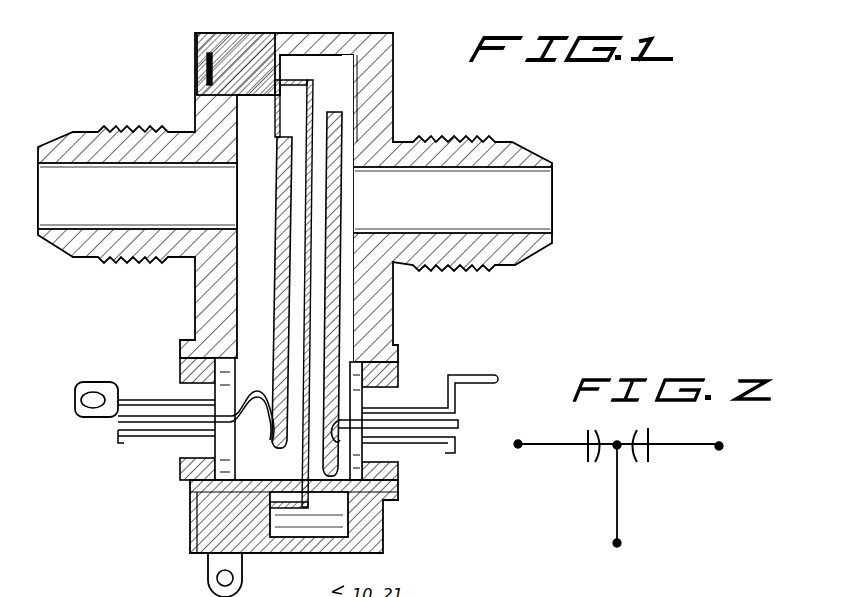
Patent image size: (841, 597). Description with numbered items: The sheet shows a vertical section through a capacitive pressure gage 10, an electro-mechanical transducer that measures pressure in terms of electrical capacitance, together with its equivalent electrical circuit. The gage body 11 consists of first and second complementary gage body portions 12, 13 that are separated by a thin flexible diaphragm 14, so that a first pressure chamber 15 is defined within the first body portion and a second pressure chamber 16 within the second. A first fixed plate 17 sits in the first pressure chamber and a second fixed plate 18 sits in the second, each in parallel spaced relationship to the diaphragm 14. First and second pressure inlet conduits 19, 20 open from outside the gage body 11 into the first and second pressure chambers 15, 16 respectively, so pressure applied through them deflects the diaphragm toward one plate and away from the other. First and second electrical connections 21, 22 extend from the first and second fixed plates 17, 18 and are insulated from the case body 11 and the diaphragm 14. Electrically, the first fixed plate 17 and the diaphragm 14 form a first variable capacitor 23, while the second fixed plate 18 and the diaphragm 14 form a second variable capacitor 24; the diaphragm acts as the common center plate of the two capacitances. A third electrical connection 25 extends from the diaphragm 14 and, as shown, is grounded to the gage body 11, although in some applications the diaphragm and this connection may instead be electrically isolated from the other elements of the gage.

In FIG. 1, the capacitive pressure gage 10 is at (414, 118).
In FIG. 1, the gage body 11 is at (318, 33).
In FIG. 1, the first gage body portion 12 is at (203, 100).
In FIG. 1, the second gage body portion 13 is at (393, 95).
In FIG. 1, the thin flexible diaphragm 14 is at (313, 100).
In FIG. 2, the thin flexible diaphragm 14 is at (607, 436).
In FIG. 1, the first pressure chamber 15 is at (247, 292).
In FIG. 1, the second pressure chamber 16 is at (347, 327).
In FIG. 1, the first fixed plate 17 is at (280, 183).
In FIG. 2, the first fixed plate 17 is at (588, 458).
In FIG. 1, the second fixed plate 18 is at (333, 205).
In FIG. 2, the second fixed plate 18 is at (648, 456).
In FIG. 1, the first pressure inlet conduit 19 is at (62, 209).
In FIG. 1, the second pressure inlet conduit 20 is at (538, 194).
In FIG. 1, the first electrical connection 21 is at (78, 383).
In FIG. 2, the first electrical connection 21 is at (518, 448).
In FIG. 1, the second electrical connection 22 is at (488, 377).
In FIG. 2, the second electrical connection 22 is at (719, 450).
In FIG. 1, the first variable capacitor 23 is at (300, 130).
In FIG. 2, the first variable capacitor 23 is at (594, 430).
In FIG. 1, the second variable capacitor 24 is at (310, 468).
In FIG. 2, the second variable capacitor 24 is at (640, 452).
In FIG. 1, the third electrical connection 25 is at (240, 582).
In FIG. 2, the third electrical connection 25 is at (619, 541).